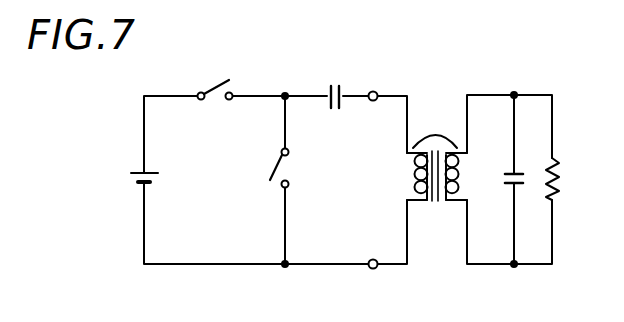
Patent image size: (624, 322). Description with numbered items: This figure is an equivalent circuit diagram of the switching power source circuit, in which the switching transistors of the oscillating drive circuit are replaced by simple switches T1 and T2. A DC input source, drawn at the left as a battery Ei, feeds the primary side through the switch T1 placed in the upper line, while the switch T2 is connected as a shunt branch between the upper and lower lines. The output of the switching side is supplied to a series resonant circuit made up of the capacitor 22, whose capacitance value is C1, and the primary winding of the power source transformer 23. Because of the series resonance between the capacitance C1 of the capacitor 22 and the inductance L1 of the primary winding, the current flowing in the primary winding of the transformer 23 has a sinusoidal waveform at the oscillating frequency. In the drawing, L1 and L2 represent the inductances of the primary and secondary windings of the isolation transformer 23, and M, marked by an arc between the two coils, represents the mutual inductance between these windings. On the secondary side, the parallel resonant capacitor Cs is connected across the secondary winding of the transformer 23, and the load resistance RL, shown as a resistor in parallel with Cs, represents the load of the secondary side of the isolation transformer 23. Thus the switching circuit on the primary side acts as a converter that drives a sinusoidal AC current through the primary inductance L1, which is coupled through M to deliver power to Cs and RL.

The capacitor 22 is at (344, 78).
The power source transformer 23 is at (436, 207).
The capacitance value C1 is at (356, 69).
The switch T1 is at (209, 92).
The switch T2 is at (300, 175).
The inductance of primary winding L1 is at (409, 177).
The inductance of secondary winding L2 is at (436, 207).
The parallel resonant capacitor Cs is at (522, 170).
The load resistance RL is at (563, 179).
The input voltage source Ei is at (135, 182).